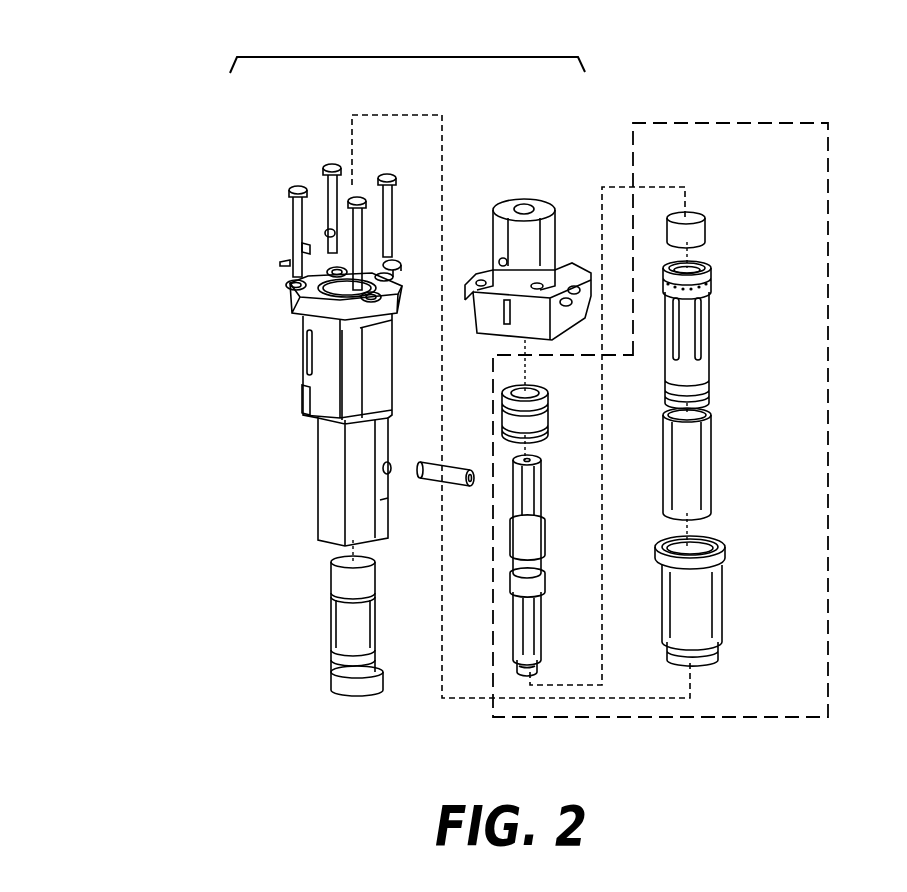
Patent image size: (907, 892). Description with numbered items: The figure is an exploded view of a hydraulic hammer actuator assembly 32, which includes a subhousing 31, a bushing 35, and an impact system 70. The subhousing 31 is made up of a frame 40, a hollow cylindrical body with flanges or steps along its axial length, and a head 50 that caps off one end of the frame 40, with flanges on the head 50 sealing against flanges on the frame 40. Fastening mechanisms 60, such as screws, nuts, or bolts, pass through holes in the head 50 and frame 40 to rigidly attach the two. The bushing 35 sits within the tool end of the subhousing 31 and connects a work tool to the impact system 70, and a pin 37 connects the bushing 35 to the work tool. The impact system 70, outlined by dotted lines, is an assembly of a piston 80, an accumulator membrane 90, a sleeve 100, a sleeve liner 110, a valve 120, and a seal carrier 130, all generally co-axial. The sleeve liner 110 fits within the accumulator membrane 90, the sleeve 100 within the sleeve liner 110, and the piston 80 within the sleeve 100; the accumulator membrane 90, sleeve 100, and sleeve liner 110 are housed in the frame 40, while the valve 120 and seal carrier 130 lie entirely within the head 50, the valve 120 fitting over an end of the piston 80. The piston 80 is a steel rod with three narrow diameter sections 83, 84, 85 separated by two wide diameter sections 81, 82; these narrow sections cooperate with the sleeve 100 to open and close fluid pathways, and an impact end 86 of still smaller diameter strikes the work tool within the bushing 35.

The subhousing 31 is at (402, 57).
The actuator assembly 32 is at (184, 461).
The bushing 35 is at (333, 637).
The pin 37 is at (425, 488).
The frame 40 is at (327, 375).
The head 50 is at (535, 203).
The fastening mechanism 60 is at (312, 174).
The impact system 70 is at (828, 692).
The piston 80 is at (526, 562).
The wide diameter section 81 is at (545, 584).
The wide diameter section 82 is at (535, 535).
The narrow diameter section 83 is at (530, 626).
The narrow diameter section 84 is at (535, 562).
The narrow diameter section 85 is at (541, 488).
The impact end 86 is at (545, 658).
The accumulator membrane 90 is at (723, 596).
The sleeve 100 is at (714, 332).
The sleeve liner 110 is at (716, 458).
The valve 120 is at (706, 230).
The seal carrier 130 is at (570, 405).